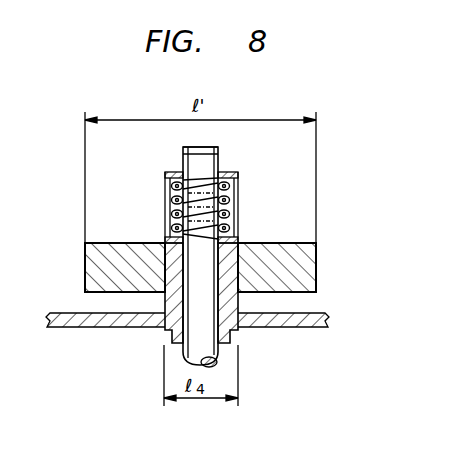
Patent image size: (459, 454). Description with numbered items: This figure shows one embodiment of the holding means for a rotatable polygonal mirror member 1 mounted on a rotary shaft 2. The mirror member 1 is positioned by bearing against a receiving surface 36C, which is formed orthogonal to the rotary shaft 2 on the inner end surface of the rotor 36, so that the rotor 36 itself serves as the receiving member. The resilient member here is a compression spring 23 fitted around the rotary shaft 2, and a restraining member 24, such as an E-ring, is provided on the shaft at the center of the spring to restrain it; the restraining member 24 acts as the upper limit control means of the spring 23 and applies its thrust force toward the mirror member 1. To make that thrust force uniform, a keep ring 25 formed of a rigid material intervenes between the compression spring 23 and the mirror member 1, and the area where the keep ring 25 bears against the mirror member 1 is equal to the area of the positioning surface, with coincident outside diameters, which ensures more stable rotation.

The rotatable polygonal mirror member 1 is at (103, 243).
The rotary shaft 2 is at (216, 364).
The compression spring 23 is at (240, 202).
The restraining member 24 is at (166, 178).
The keep ring 25 is at (240, 232).
The rotor 36 is at (318, 313).
The receiving surface 36C is at (220, 283).